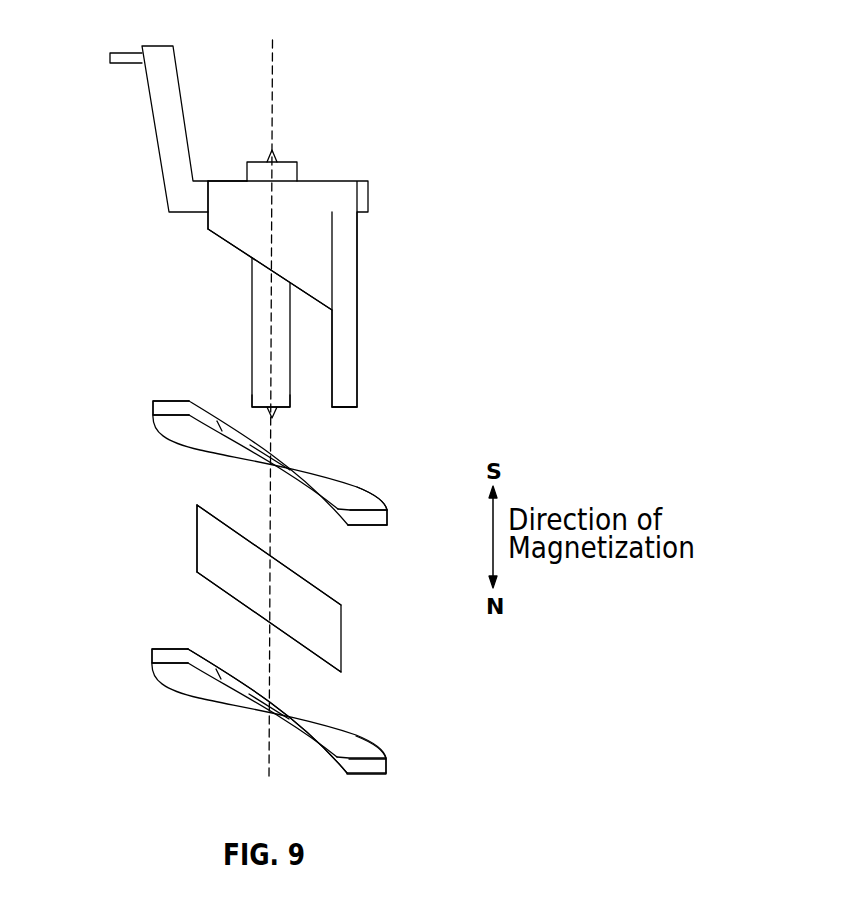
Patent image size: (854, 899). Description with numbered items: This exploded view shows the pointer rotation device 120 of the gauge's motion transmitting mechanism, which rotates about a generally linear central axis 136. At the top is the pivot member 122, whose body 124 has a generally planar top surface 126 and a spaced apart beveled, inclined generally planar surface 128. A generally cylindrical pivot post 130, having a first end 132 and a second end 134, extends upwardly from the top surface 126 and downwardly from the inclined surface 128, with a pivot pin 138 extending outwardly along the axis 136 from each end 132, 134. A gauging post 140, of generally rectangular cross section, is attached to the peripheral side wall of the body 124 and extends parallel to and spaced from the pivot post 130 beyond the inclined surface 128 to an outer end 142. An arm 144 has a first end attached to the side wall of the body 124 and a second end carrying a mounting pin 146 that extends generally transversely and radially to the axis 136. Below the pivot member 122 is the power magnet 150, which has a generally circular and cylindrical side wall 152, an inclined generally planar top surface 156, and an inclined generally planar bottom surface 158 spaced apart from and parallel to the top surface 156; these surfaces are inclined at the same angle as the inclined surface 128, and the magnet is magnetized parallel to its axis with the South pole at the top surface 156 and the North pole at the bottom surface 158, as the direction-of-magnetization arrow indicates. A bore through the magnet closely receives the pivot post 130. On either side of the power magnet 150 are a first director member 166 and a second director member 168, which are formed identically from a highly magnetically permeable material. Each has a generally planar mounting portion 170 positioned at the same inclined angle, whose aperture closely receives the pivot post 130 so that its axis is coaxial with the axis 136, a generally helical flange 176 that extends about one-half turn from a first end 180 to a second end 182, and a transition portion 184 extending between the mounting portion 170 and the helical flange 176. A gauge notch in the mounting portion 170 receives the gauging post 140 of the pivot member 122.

The pointer rotation device 120 is at (455, 48).
The pivot member 122 is at (323, 179).
The body 124 is at (210, 220).
The top surface 126 is at (226, 181).
The inclined surface 128 is at (232, 245).
The pivot post 130 is at (250, 323).
The first end 132 is at (298, 163).
The second end 134 is at (252, 395).
The central axis 136 is at (277, 79).
The pivot pin 138 is at (276, 157).
The gauging post 140 is at (348, 352).
The outer end 142 is at (350, 408).
The arm 144 is at (158, 133).
The mounting pin 146 is at (125, 64).
The power magnet 150 is at (348, 637).
The side wall 152 is at (195, 538).
The top surface 156 is at (230, 527).
The bottom surface 158 is at (213, 588).
The first director member 166 is at (365, 482).
The second director member 168 is at (376, 736).
The mounting portion 170 is at (307, 488).
The helical flange 176 is at (371, 505).
The first end 180 is at (371, 518).
The second end 182 is at (160, 406).
The transition portion 184 is at (205, 670).